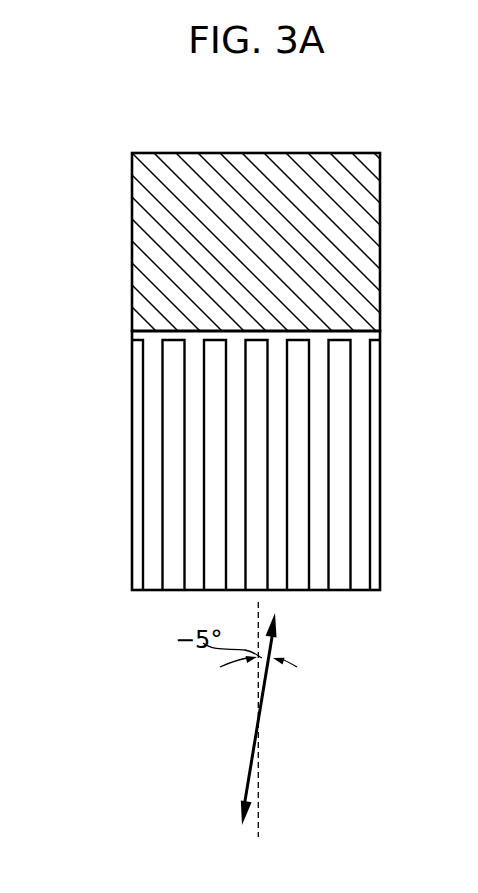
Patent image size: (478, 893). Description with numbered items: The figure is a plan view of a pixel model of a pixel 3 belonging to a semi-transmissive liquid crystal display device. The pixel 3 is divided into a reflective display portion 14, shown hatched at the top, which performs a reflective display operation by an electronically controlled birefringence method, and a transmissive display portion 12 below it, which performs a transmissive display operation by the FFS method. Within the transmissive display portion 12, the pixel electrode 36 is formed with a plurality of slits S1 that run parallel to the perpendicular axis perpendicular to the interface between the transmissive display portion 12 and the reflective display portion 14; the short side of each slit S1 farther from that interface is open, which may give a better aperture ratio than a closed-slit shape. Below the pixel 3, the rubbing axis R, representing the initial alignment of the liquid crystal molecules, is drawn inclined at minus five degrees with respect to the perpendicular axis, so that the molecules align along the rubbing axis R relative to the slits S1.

The pixel 3 is at (352, 130).
The reflective display portion 14 is at (398, 205).
The transmissive display portion 12 is at (410, 547).
The pixel electrode 36 is at (362, 380).
The slit S1 is at (250, 472).
The rubbing axis R is at (270, 711).